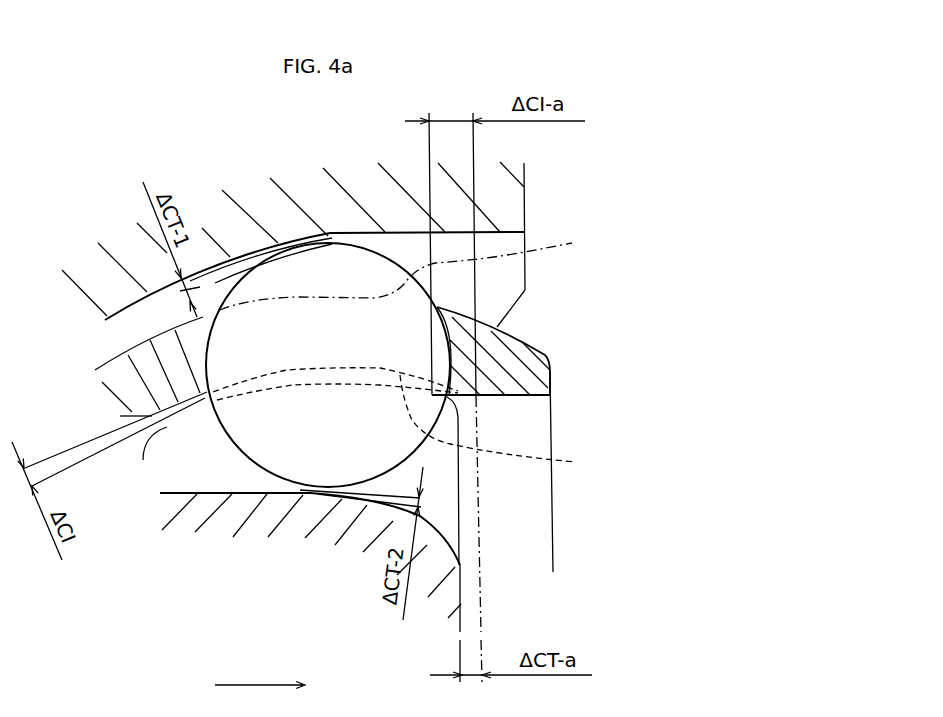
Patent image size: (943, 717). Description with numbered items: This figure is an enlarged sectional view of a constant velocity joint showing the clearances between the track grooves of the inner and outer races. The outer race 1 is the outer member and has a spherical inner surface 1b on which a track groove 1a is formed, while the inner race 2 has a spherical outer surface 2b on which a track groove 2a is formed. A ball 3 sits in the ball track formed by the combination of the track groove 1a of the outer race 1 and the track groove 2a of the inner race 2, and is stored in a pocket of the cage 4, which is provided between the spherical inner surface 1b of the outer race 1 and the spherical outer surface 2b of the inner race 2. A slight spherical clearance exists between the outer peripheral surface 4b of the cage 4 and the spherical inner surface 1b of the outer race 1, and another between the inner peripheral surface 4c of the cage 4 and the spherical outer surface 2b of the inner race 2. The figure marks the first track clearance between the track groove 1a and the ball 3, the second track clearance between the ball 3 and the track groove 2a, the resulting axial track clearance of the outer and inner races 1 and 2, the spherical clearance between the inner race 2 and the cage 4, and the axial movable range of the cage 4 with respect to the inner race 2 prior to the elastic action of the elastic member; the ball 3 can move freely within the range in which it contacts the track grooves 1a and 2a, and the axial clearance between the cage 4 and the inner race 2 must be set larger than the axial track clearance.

The outer race 1 is at (215, 203).
The track groove 1a is at (358, 244).
The spherical inner surface 1b is at (330, 300).
The inner race 2 is at (326, 558).
The track groove 2a is at (268, 490).
The spherical outer surface 2b is at (273, 389).
The ball 3 is at (388, 243).
The cage 4 is at (544, 332).
The outer peripheral surface 4b is at (572, 243).
The inner peripheral surface 4c is at (575, 462).